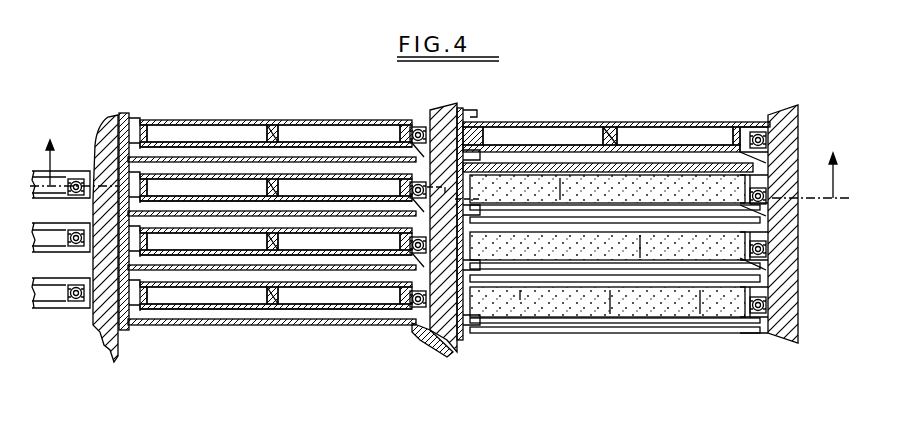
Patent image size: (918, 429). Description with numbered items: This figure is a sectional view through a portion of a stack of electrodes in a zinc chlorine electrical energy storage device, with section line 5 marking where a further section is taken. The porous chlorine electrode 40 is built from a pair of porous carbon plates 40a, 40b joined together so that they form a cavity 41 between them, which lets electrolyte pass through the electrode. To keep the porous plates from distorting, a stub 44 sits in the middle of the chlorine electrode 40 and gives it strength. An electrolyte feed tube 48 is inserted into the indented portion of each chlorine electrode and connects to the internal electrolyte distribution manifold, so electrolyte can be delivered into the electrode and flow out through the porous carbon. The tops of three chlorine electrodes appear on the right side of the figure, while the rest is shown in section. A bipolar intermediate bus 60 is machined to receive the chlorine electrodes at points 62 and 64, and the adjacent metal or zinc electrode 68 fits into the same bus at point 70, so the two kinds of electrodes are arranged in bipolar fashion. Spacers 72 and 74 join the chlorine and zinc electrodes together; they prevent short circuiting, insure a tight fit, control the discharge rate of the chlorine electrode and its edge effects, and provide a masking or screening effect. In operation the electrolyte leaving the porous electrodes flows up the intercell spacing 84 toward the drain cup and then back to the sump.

The section line 5- 5 is at (441, 154).
The porous chlorine electrode 40 is at (333, 120).
The porous carbon plate 40a is at (263, 120).
The porous carbon plate 40b is at (237, 140).
The cavity 41 is at (365, 137).
The stub 44 is at (272, 128).
The electrolyte feed tube 48 is at (76, 178).
The bipolar intermediate bus 60 is at (447, 338).
The receiving point 62 is at (438, 128).
The receiving point 64 is at (462, 128).
The zinc electrode 68 is at (172, 157).
The fitting point 70 is at (456, 278).
The spacer 72 is at (134, 112).
The spacer 74 is at (770, 167).
The intercell spacing 84 is at (196, 158).